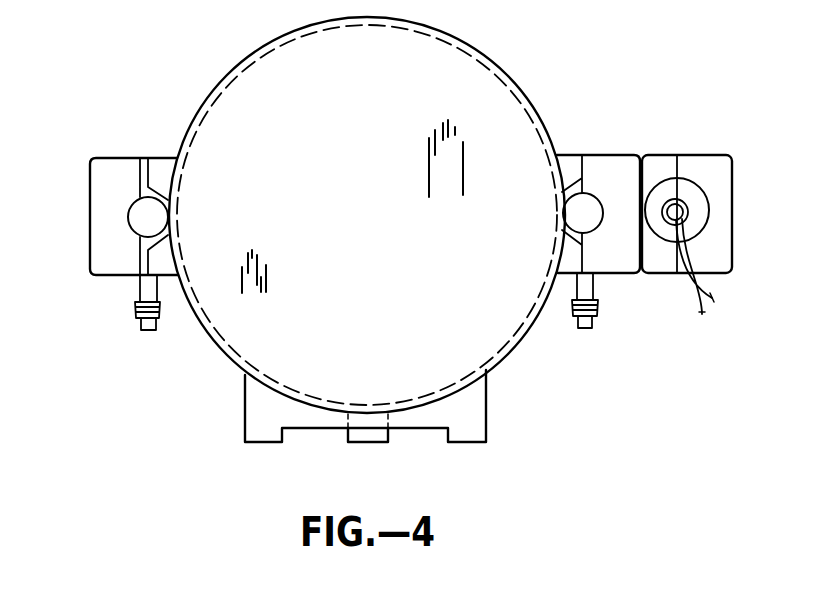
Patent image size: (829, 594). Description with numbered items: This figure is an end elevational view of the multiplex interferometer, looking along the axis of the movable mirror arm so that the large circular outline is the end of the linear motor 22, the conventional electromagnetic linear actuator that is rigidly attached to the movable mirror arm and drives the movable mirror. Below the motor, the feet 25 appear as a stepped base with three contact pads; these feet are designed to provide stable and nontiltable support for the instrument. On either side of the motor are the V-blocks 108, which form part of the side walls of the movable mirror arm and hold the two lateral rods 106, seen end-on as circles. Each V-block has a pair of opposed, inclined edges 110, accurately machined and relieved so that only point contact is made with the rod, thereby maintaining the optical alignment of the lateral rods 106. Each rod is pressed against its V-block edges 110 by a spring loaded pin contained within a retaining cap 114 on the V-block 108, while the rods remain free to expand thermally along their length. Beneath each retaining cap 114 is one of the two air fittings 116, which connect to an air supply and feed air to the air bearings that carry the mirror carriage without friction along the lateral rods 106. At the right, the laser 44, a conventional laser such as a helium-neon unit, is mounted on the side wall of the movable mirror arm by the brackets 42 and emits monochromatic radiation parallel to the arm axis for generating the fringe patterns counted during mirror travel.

The linear motor 22 is at (353, 225).
The feet 25 is at (258, 437).
The brackets 42 is at (657, 163).
The laser 44 is at (698, 208).
The lateral rods 106 is at (145, 207).
The V-blocks 108 is at (168, 157).
The inclined edges 110 is at (170, 190).
The retaining cap 114 is at (100, 212).
The air fittings 116 is at (140, 325).